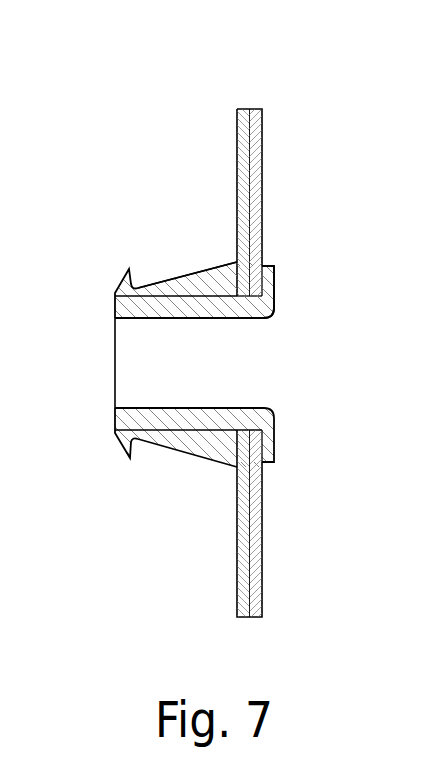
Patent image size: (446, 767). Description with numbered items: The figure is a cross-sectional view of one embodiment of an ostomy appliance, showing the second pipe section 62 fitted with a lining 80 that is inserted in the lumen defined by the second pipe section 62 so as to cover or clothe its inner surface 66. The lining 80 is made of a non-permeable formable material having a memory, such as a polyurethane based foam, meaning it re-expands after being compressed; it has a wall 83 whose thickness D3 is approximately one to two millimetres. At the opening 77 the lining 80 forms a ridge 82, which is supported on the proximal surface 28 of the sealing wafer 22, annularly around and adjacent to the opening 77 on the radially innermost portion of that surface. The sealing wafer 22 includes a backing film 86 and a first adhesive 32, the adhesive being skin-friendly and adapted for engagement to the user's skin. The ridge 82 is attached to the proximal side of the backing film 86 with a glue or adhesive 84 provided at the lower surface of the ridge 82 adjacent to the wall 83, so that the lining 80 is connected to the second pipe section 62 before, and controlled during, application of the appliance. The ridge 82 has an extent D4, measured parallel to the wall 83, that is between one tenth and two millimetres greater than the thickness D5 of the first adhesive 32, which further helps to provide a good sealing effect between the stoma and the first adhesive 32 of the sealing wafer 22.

The sealing wafer 22 is at (241, 108).
The first adhesive 32 is at (254, 141).
The backing film 86 is at (246, 141).
The second pipe section 62 is at (175, 283).
The inner surface 66 is at (207, 297).
The ridge 82 is at (274, 274).
The lining 80 is at (263, 298).
The opening 77 is at (270, 343).
The wall 83 is at (130, 416).
The first proximal surface 28 is at (271, 492).
The glue or adhesive 84 is at (242, 517).
The thickness of the wall D3 is at (162, 440).
The extent of the ridge D4 is at (217, 375).
The thickness of the first adhesive D5 is at (217, 653).